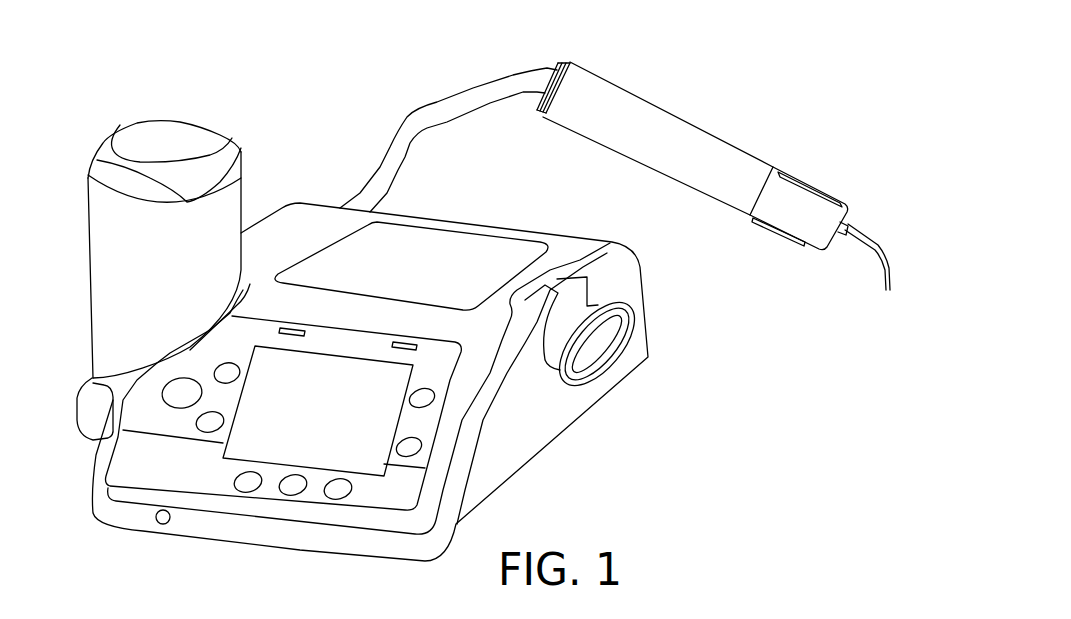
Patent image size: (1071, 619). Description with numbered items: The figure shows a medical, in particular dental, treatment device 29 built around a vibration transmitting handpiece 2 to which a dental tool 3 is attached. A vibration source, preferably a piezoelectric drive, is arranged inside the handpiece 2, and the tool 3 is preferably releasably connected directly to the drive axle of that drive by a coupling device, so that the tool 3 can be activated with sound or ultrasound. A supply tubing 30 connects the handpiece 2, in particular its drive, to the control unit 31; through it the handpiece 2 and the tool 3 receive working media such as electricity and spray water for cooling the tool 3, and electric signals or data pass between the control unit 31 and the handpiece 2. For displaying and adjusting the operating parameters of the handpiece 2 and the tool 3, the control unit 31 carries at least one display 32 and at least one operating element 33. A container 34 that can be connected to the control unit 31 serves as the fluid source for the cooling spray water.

The treatment device 29 is at (813, 102).
The vibration transmitting handpiece 2 is at (705, 133).
The tool 3 is at (863, 238).
The supply tubing 30 is at (437, 102).
The control unit 31 is at (528, 433).
The display 32 is at (258, 437).
The operating element 33 is at (338, 493).
The container 34 is at (110, 233).